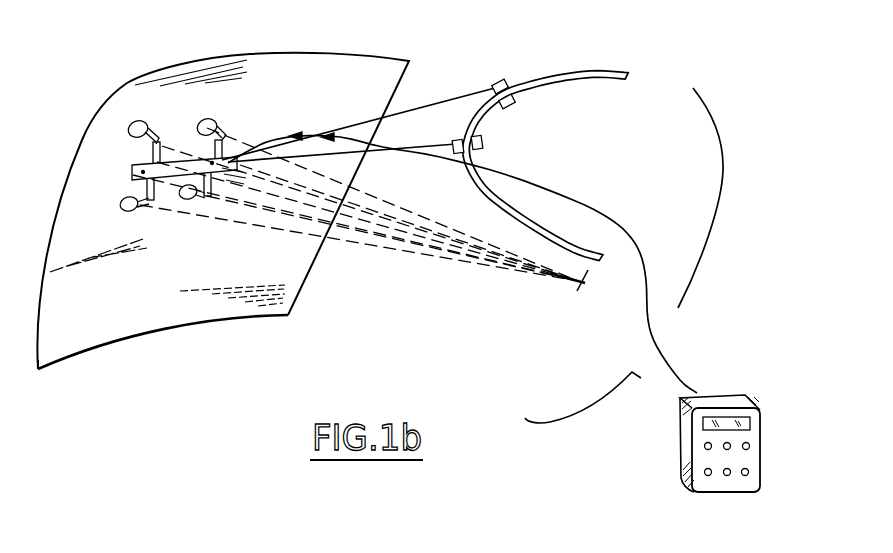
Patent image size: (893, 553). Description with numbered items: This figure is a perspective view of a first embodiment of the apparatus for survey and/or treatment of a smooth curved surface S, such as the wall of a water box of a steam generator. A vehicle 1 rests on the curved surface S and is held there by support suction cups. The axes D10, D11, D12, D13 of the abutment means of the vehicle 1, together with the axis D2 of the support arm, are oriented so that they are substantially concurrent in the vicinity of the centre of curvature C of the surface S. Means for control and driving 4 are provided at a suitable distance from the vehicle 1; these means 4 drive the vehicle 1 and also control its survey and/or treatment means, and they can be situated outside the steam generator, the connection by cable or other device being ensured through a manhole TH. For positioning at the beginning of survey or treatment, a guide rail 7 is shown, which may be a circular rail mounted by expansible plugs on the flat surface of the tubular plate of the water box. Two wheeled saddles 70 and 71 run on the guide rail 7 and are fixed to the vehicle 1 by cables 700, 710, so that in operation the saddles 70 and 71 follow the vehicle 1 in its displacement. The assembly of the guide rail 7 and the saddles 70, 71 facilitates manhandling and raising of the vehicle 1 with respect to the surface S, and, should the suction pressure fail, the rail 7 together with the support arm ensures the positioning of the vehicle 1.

The smooth curved surface S is at (377, 73).
The vehicle 1 is at (133, 165).
The cable 700 is at (470, 88).
The cable 710 is at (404, 147).
The guide rail 7 is at (623, 71).
The wheeled saddle 70 is at (506, 82).
The wheeled saddle 71 is at (484, 145).
The axis of abutment means D10 is at (361, 191).
The axis of abutment means D11 is at (398, 220).
The axis of support arm D2 is at (293, 199).
The axis of abutment means D12 is at (370, 248).
The axis of abutment means D13 is at (410, 248).
The centre of curvature C is at (587, 292).
The manhole TH is at (686, 316).
The means for control and driving 4 is at (733, 397).